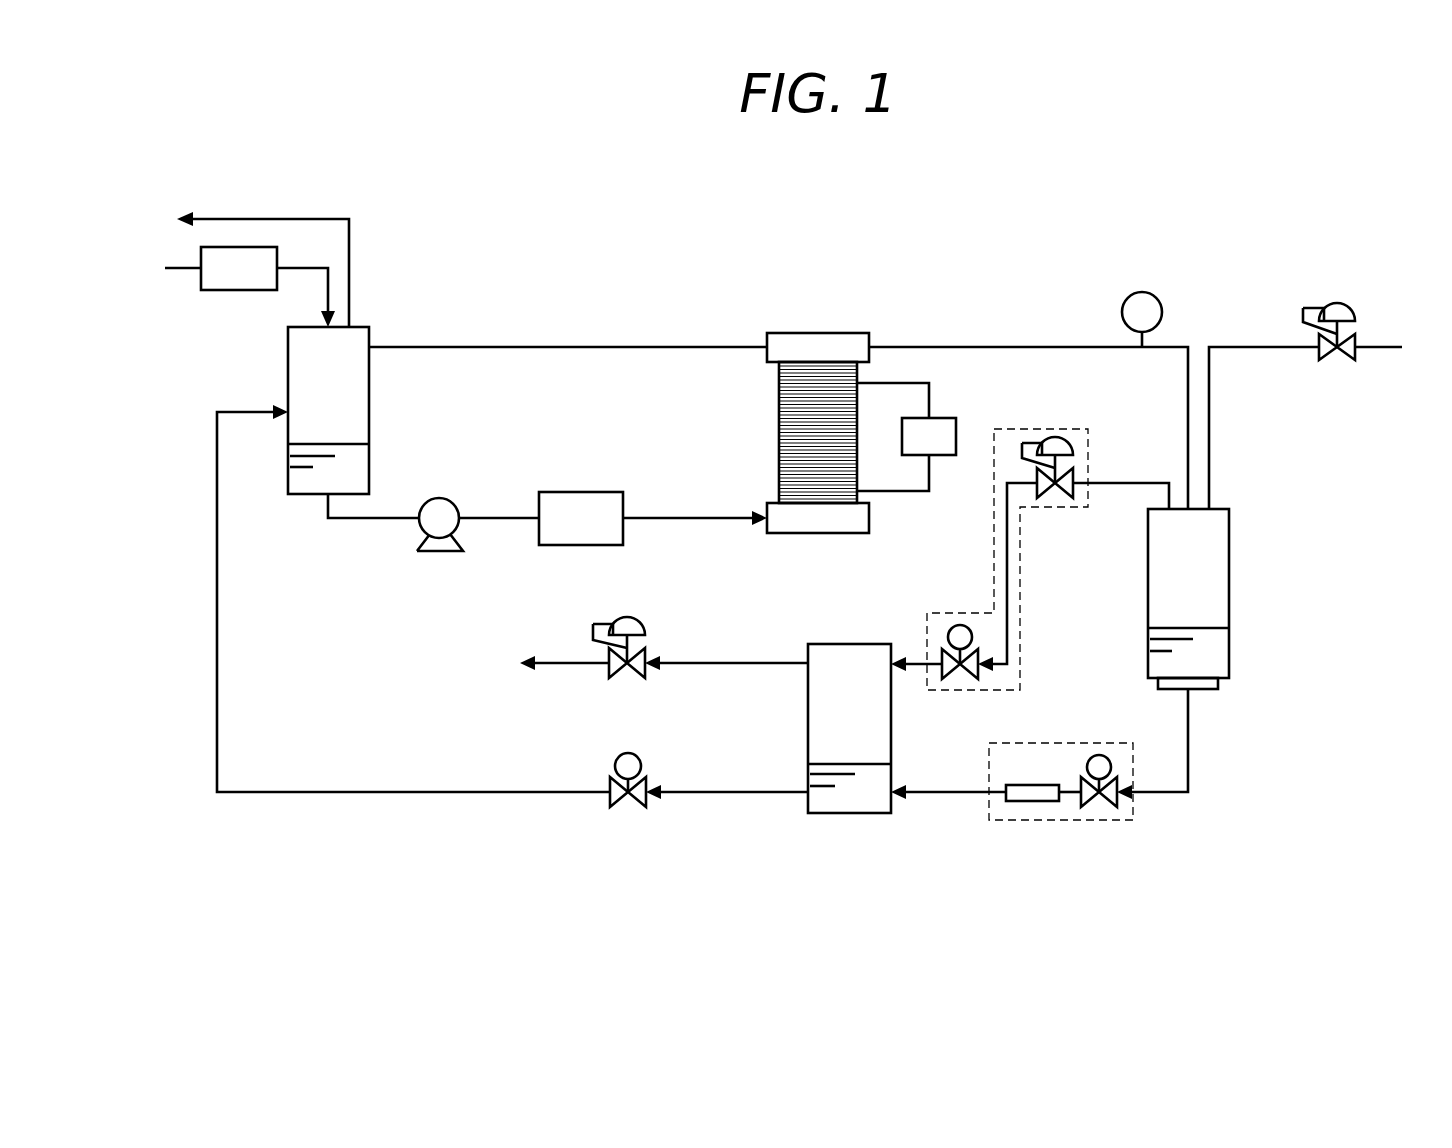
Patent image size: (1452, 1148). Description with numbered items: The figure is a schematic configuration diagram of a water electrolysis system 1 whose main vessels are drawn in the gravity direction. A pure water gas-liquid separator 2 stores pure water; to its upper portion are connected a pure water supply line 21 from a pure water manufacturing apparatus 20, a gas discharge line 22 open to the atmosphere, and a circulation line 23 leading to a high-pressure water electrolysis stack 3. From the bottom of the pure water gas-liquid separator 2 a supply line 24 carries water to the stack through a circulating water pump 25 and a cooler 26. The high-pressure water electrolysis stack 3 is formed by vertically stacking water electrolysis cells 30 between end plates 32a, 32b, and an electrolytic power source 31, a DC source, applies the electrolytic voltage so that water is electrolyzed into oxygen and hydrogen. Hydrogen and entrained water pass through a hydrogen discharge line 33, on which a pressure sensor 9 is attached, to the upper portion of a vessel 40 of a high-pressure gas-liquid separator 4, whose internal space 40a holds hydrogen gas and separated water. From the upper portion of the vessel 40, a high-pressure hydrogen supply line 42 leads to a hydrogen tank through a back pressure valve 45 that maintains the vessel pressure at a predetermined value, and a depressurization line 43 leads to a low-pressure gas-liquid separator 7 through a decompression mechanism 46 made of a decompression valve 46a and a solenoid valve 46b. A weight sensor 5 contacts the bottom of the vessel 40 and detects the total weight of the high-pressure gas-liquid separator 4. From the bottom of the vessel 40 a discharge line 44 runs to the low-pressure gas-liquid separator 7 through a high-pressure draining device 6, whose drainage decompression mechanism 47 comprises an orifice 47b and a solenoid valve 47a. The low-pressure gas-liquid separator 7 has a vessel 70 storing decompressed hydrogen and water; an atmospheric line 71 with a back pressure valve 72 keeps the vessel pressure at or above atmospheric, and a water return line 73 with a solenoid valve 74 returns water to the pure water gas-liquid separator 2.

The water electrolysis system 1 is at (1133, 222).
The pure water gas-liquid separator 2 is at (373, 326).
The high-pressure water electrolysis stack 3 is at (848, 433).
The high-pressure gas-liquid separator 4 is at (1095, 618).
The weight sensor 5 is at (1210, 690).
The high-pressure draining device 6 is at (1137, 875).
The low-pressure gas-liquid separator 7 is at (880, 699).
The pressure sensor 9 is at (1155, 291).
The pure water manufacturing apparatus 20 is at (216, 290).
The pure water supply line 21 is at (300, 268).
The gas discharge line 22 is at (328, 218).
The circulation line 23 is at (498, 347).
The supply line 24 is at (362, 521).
The circulating water pump 25 is at (447, 500).
The cooler 26 is at (596, 492).
The water electrolysis cell 30 is at (779, 415).
The electrolytic power source 31 is at (945, 418).
The end plate 32a is at (848, 533).
The end plate 32b is at (797, 333).
The hydrogen discharge line 33 is at (1052, 347).
The vessel 40 is at (1223, 593).
The internal space 40a is at (1233, 608).
The high-pressure hydrogen supply line 42 is at (1243, 347).
The depressurization line 43 is at (1137, 480).
The discharge line 44 is at (1168, 795).
The back pressure valve 45 is at (1340, 303).
The decompression mechanism 46 is at (1022, 534).
The decompression valve 46a is at (1060, 438).
The solenoid valve 46b is at (960, 613).
The drainage decompression mechanism 47 is at (1012, 798).
The solenoid valve 47a is at (1099, 755).
The orifice 47b is at (1032, 785).
The vessel 70 is at (891, 714).
The atmospheric line 71 is at (725, 660).
The back pressure valve 72 is at (640, 620).
The water return line 73 is at (765, 795).
The solenoid valve 74 is at (635, 753).